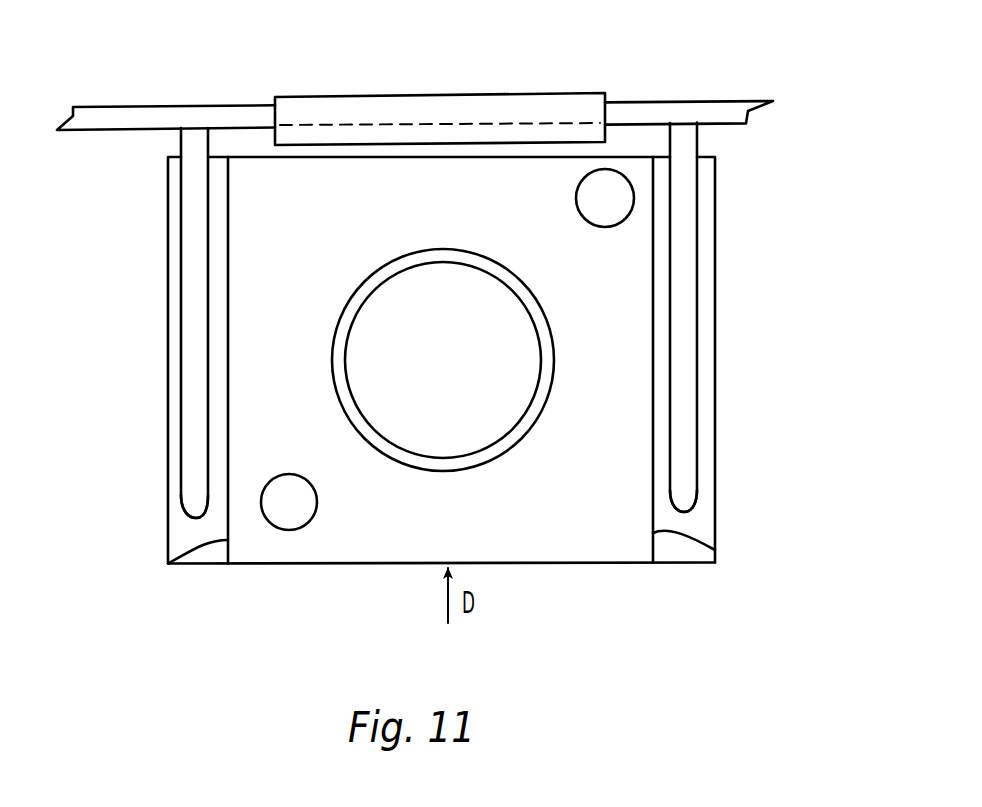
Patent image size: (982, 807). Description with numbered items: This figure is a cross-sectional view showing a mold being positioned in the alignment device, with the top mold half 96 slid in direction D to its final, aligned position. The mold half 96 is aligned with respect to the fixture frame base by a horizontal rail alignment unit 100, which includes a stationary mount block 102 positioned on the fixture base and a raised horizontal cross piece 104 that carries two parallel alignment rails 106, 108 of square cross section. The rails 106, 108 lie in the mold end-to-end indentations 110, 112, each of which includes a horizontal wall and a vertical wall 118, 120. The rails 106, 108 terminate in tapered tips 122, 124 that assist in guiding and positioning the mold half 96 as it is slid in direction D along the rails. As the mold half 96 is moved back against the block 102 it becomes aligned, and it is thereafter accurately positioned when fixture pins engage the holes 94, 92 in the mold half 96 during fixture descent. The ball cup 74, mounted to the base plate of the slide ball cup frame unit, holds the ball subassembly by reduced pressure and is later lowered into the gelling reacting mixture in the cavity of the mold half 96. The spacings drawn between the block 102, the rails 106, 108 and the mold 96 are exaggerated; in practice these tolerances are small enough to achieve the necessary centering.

The ball cup 74 is at (572, 328).
The hole 92 is at (302, 500).
The hole 94 is at (585, 203).
The top mold half 96 is at (582, 512).
The horizontal rail alignment unit 100 is at (415, 72).
The stationary mount block 102 is at (549, 108).
The raised horizontal cross piece 104 is at (727, 107).
The alignment rail 106 is at (693, 273).
The alignment rail 108 is at (193, 264).
The mold end indentation 110 is at (728, 528).
The mold end indentation 112 is at (168, 530).
The vertical wall 118 is at (168, 564).
The vertical wall 120 is at (715, 550).
The tapered tip 122 is at (687, 483).
The tapered tip 124 is at (193, 494).